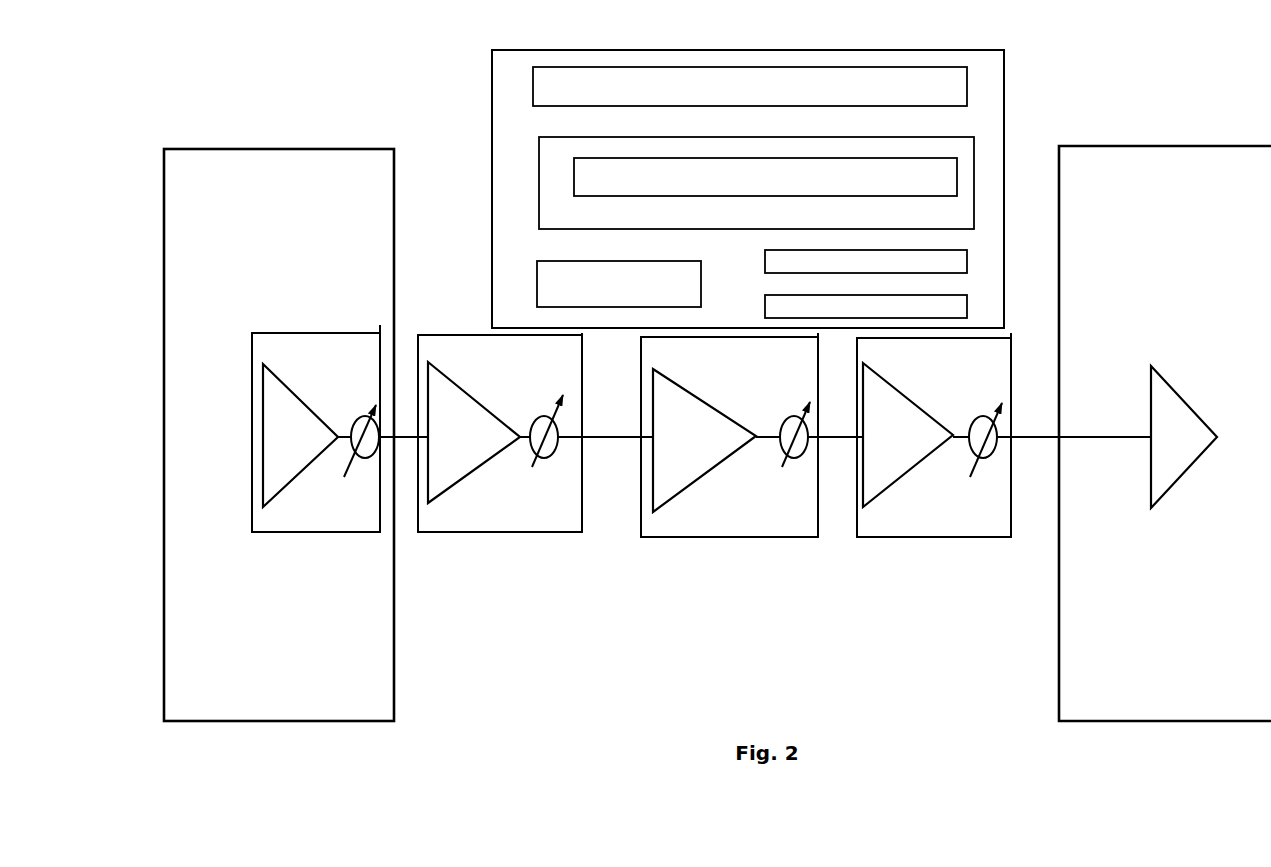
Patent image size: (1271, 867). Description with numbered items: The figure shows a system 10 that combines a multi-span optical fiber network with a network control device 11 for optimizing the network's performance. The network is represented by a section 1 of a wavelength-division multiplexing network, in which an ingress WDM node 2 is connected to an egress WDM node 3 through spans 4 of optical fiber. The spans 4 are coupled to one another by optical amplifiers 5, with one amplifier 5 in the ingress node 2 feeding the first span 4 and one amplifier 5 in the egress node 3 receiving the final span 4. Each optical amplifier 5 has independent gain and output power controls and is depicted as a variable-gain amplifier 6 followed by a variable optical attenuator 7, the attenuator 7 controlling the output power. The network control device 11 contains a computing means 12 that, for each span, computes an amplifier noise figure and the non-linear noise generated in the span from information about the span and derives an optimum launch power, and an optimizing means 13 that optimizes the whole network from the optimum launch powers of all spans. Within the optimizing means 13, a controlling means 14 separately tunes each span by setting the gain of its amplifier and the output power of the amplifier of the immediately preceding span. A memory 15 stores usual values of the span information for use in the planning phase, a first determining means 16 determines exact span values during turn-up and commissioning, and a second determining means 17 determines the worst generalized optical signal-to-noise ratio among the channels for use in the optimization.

The section of an optical fiber network 1 is at (652, 656).
The ingress WDM node 2 is at (330, 726).
The egress WDM node 3 is at (1153, 725).
The span of optical fiber 4 is at (407, 440).
The optical amplifier 5 is at (253, 533).
The variable-gain amplifier 6 is at (293, 467).
The variable optical attenuator 7 is at (363, 460).
The system 10 is at (1146, 108).
The network control device 11 is at (494, 69).
The computing means 12 is at (534, 85).
The optimizing means 13 is at (540, 163).
The controlling means 14 is at (575, 177).
The memory 15 is at (538, 278).
The first determining means 16 is at (950, 263).
The second determining means 17 is at (953, 308).